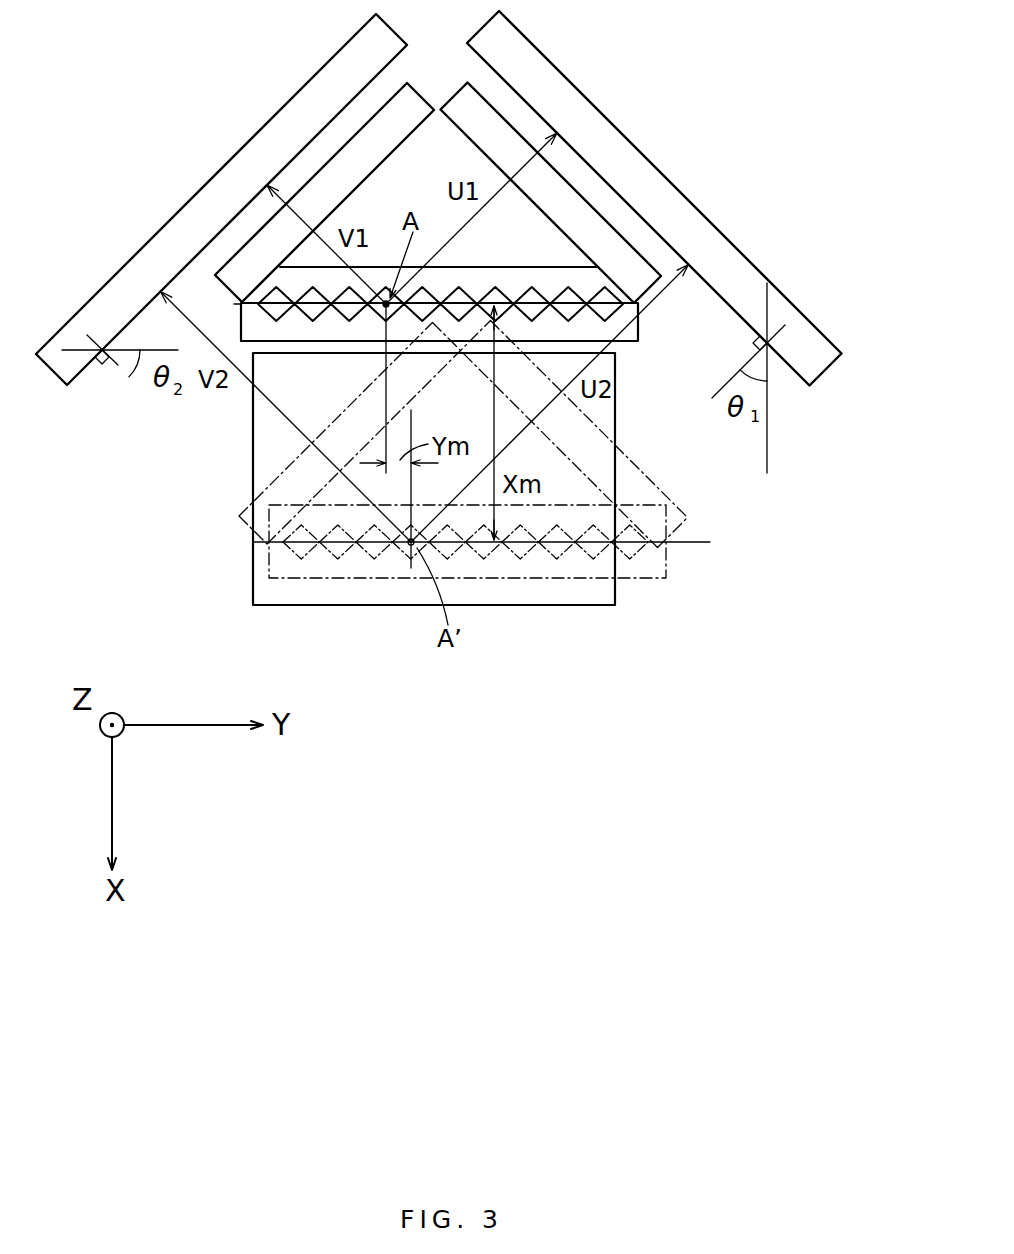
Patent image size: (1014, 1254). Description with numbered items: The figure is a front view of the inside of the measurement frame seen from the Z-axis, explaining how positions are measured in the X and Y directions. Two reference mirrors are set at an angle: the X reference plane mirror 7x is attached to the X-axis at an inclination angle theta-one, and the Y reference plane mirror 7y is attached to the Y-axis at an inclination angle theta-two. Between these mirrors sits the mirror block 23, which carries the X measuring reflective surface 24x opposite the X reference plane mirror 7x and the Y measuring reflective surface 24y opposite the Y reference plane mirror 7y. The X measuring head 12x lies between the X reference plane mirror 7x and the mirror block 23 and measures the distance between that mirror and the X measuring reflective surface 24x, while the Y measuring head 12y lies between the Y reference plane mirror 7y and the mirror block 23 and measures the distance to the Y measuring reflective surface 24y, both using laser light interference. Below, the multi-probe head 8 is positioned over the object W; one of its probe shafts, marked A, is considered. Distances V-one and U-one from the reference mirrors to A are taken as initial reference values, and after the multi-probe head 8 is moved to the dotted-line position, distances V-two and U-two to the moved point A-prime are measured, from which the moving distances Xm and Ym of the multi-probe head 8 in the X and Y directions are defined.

The Y reference plane mirror 7y is at (230, 197).
The X reference plane mirror 7x is at (783, 323).
The Y measuring head 12y is at (377, 140).
The X measuring head 12x is at (485, 133).
The Y measuring reflective surface 24y is at (483, 293).
The mirror block 23 is at (530, 300).
The X measuring reflective surface 24x is at (615, 292).
The multi-probe head 8 is at (630, 331).
The object W is at (603, 415).